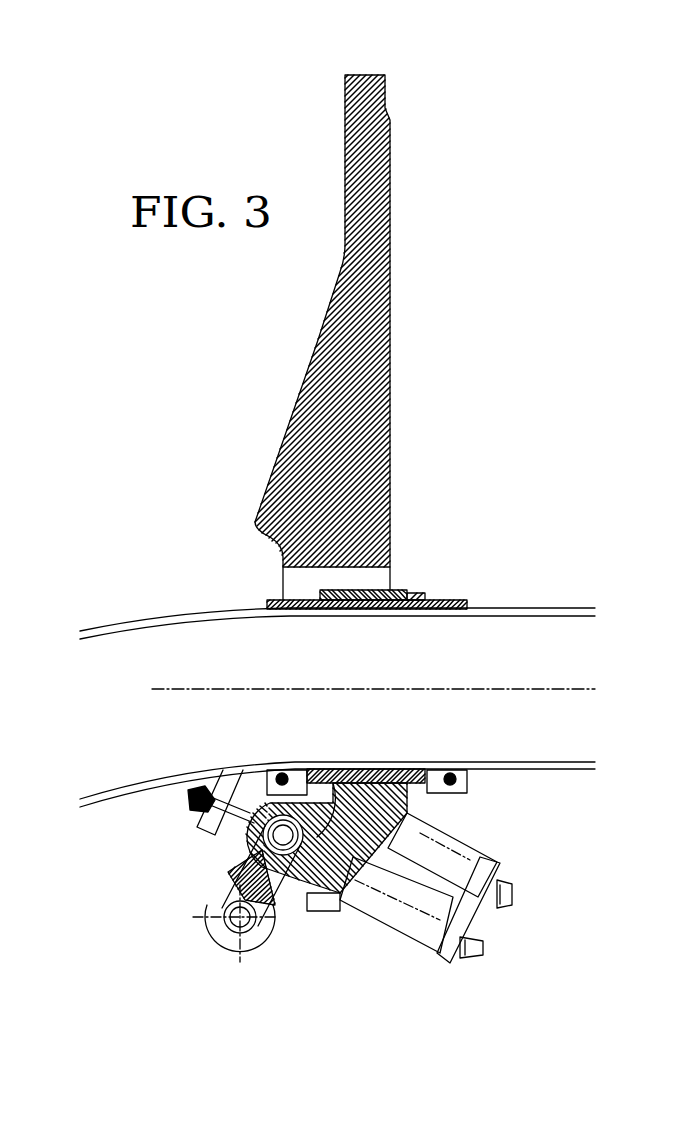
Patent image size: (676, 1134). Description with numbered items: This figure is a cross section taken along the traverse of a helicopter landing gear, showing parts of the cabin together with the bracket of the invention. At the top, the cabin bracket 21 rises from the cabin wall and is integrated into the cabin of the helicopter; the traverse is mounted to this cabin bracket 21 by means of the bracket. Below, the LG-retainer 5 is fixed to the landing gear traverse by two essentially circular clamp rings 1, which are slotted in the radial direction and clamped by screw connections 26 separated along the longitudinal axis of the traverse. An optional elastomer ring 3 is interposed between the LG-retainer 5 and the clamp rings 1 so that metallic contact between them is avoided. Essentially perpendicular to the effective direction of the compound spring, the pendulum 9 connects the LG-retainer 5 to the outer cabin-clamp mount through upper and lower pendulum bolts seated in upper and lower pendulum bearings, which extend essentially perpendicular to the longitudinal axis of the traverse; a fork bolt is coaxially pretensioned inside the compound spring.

The clamp rings 1 is at (272, 600).
The elastomer ring 3 is at (415, 593).
The LG-retainer 5 is at (395, 590).
The cabin bracket 21 is at (392, 400).
The screw connections 26 is at (280, 770).
The pendulum 9 is at (210, 848).